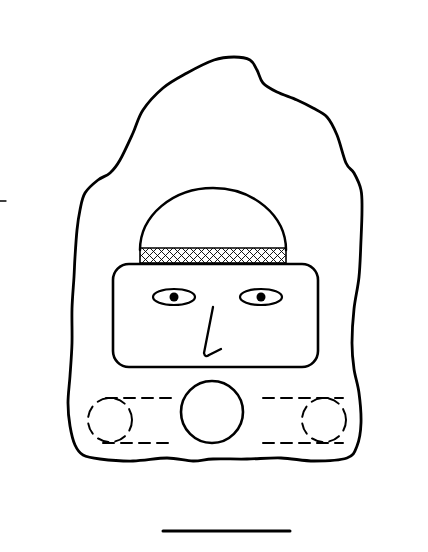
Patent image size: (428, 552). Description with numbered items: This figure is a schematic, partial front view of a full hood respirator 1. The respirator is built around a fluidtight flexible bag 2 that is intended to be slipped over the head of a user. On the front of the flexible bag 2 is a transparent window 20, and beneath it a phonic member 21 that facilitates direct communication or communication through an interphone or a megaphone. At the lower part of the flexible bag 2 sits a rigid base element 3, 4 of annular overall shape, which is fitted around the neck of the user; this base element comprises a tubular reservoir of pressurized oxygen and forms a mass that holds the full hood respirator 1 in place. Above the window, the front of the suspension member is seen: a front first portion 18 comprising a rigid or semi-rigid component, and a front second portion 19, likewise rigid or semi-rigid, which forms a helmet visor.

The full hood respirator 1 is at (297, 82).
The fluidtight flexible bag 2 is at (136, 124).
The rigid base element 3 is at (66, 425).
The rigid base element 4 is at (90, 425).
The front first portion 18 is at (262, 200).
The front second portion 19 is at (143, 257).
The transparent window 20 is at (127, 344).
The phonic member 21 is at (189, 386).